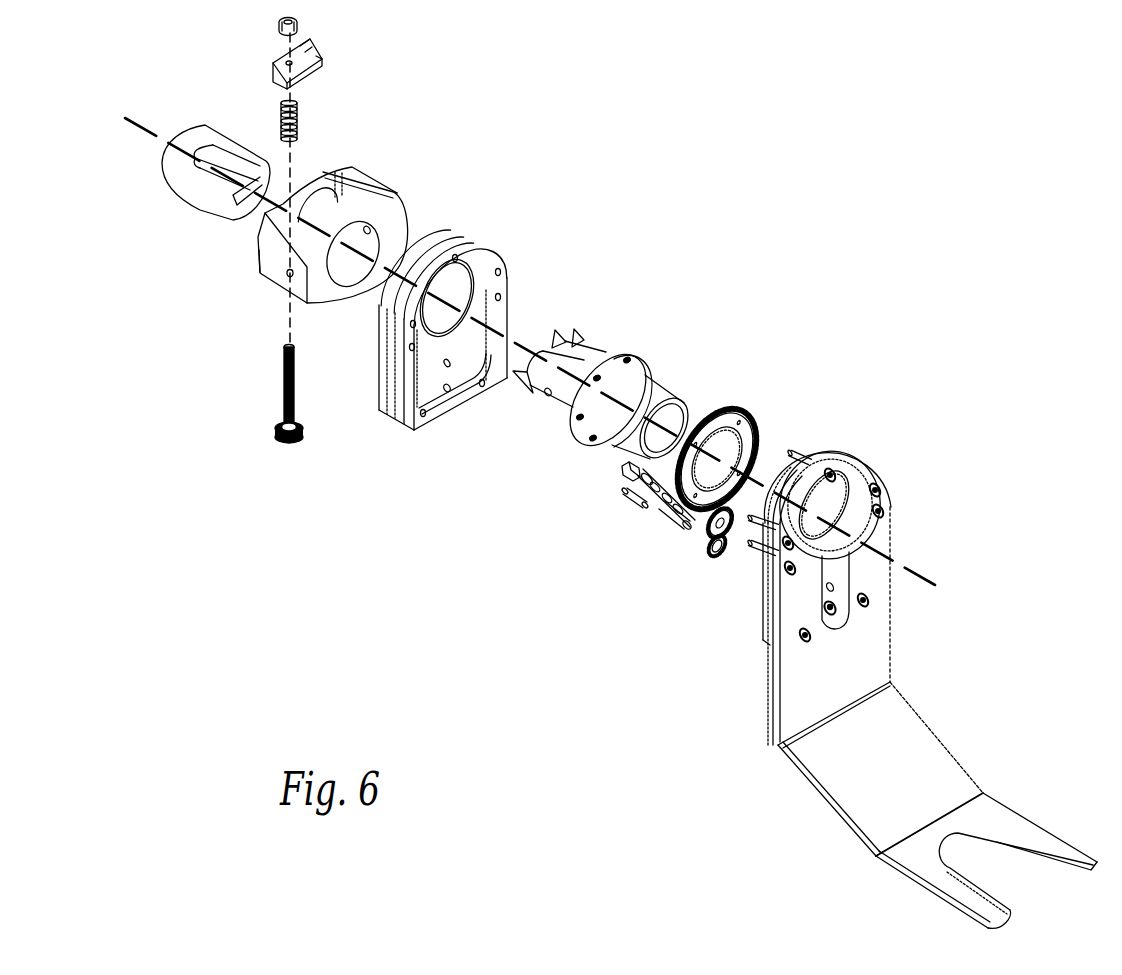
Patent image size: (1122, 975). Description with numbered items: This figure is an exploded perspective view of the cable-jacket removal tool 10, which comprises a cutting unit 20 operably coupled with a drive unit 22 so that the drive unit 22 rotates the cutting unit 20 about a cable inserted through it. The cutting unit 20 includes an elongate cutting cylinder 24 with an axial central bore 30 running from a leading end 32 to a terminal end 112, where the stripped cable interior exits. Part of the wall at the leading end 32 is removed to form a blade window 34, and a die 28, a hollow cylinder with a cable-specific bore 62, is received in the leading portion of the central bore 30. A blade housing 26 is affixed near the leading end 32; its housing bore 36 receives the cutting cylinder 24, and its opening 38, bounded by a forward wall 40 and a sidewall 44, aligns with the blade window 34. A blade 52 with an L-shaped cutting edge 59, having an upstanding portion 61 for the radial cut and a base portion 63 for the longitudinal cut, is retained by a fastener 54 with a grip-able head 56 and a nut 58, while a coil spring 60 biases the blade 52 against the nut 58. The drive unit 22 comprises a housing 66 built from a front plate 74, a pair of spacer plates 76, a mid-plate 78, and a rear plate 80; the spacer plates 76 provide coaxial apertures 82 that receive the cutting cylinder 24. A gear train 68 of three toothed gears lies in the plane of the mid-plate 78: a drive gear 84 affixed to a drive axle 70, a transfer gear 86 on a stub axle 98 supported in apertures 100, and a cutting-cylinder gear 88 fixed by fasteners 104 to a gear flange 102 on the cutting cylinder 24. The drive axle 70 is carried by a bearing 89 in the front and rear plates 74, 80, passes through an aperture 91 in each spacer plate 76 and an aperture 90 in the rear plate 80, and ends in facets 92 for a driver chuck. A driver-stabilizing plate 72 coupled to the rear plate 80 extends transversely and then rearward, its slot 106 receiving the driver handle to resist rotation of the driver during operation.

The cable-jacket removal tool 10 is at (129, 343).
The cutting unit 20 is at (375, 129).
The drive unit 22 is at (696, 267).
The cutting cylinder 24 is at (557, 370).
The blade housing 26 is at (337, 220).
The die 28 is at (198, 126).
The central bore 30 is at (683, 412).
The leading end 32 is at (555, 330).
The blade window 34 is at (574, 330).
The housing bore 36 is at (400, 243).
The opening 38 is at (298, 238).
The forward wall 40 is at (329, 183).
The sidewall 44 is at (354, 194).
The blade 52 is at (273, 67).
The fastener 54 is at (298, 389).
The head 56 is at (304, 436).
The nut 58 is at (280, 25).
The cutting edge 59 is at (309, 54).
The coil spring 60 is at (298, 111).
The upstanding portion 61 is at (306, 46).
The cable-specific bore 62 is at (243, 213).
The base portion 63 is at (318, 58).
The housing 66 is at (622, 423).
The gear train 68 is at (732, 455).
The drive axle 70 is at (650, 510).
The driver-stabilizing plate 72 is at (913, 685).
The front plate 74 is at (379, 381).
The spacer plates 76 is at (390, 408).
The mid-plate 78 is at (398, 430).
The rear plate 80 is at (772, 642).
The apertures 82 is at (463, 270).
The drive gear 84 is at (712, 554).
The transfer gear 86 is at (733, 513).
The cutting-cylinder gear 88 is at (762, 438).
The bearing 89 is at (830, 614).
The aperture 90 is at (835, 609).
The aperture 91 is at (449, 393).
The facets 92 is at (672, 521).
The stub axle 98 is at (622, 471).
The apertures 100 is at (833, 588).
The gear flange 102 is at (623, 353).
The fasteners 104 is at (880, 490).
The slot 106 is at (998, 840).
The terminal end 112 is at (720, 385).